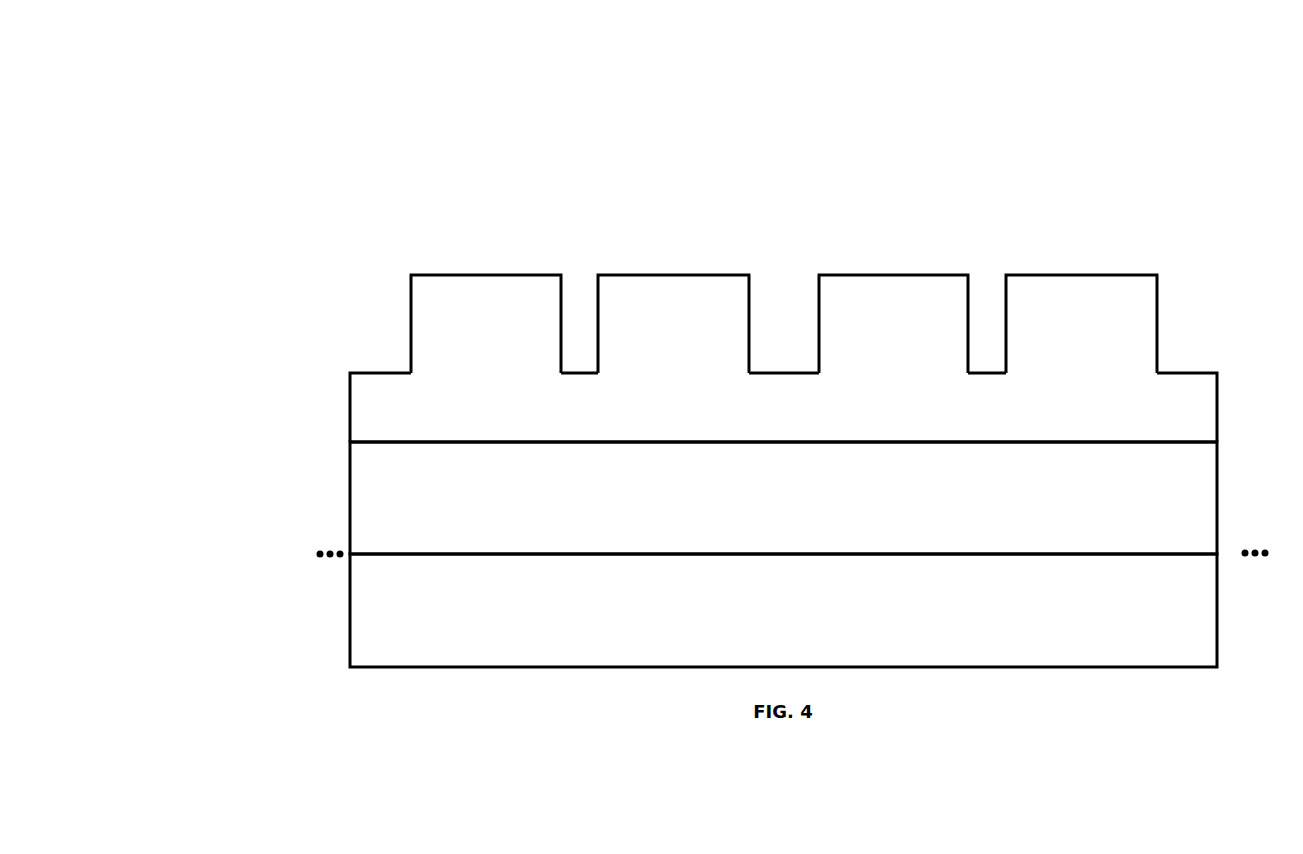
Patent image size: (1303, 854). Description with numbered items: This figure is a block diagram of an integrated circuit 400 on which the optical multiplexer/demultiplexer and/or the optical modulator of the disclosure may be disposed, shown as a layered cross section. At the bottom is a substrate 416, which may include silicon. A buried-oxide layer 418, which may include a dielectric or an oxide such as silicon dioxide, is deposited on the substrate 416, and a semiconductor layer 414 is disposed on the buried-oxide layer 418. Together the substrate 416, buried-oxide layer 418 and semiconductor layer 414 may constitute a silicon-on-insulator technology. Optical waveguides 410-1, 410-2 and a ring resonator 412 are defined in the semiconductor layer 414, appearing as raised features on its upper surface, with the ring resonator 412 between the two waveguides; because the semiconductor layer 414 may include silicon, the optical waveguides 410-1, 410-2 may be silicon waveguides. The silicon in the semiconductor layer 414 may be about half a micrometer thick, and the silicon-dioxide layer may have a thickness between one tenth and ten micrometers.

The integrated circuit 400 is at (697, 353).
The optical waveguide 410-1 is at (453, 295).
The optical waveguide 410-2 is at (1113, 295).
The ring resonator 412 is at (968, 257).
The semiconductor layer 414 is at (530, 397).
The substrate 416 is at (783, 610).
The buried-oxide (BOX) layer 418 is at (783, 498).